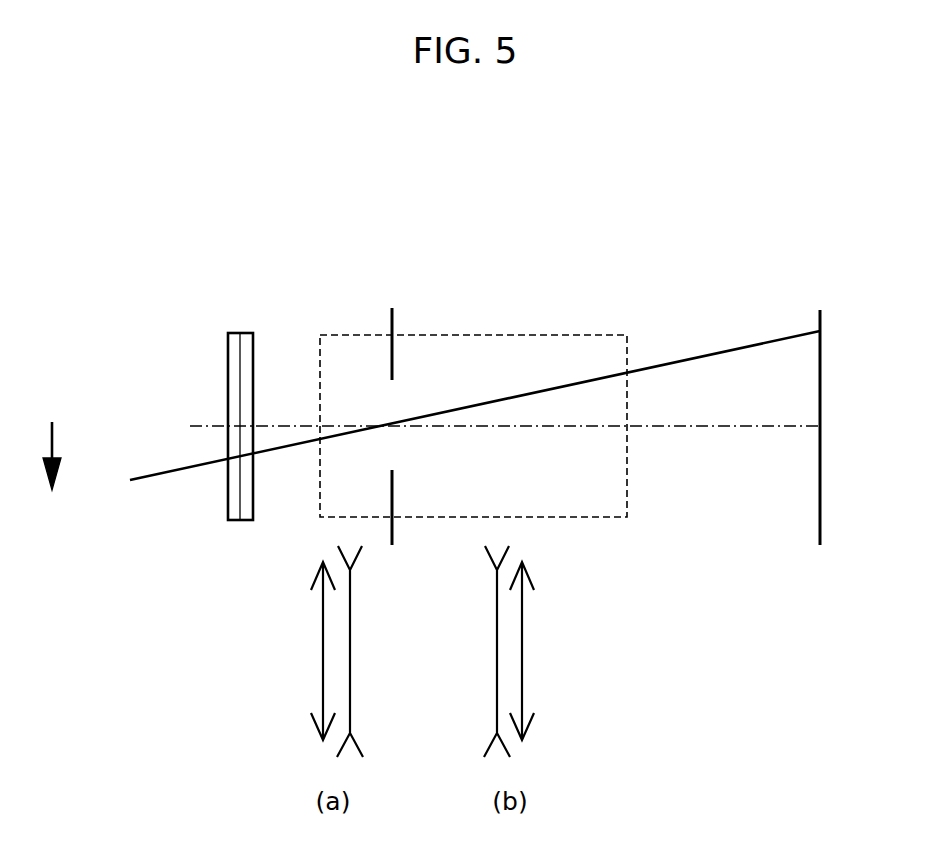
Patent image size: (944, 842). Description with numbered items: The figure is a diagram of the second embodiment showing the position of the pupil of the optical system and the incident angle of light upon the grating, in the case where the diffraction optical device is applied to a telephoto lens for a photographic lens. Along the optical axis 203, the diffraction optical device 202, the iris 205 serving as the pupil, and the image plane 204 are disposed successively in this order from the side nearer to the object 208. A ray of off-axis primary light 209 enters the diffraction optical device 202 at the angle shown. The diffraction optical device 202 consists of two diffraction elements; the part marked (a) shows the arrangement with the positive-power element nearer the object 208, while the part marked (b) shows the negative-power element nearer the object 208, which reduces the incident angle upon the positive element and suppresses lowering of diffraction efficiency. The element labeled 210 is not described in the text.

The diffraction optical device 202 is at (237, 522).
The optical axis 203 is at (683, 430).
The image plane 204 is at (818, 331).
The iris 205 is at (392, 335).
The object 208 is at (55, 440).
The off-axis primary light 209 is at (158, 470).
The transparent plate 210 is at (232, 333).